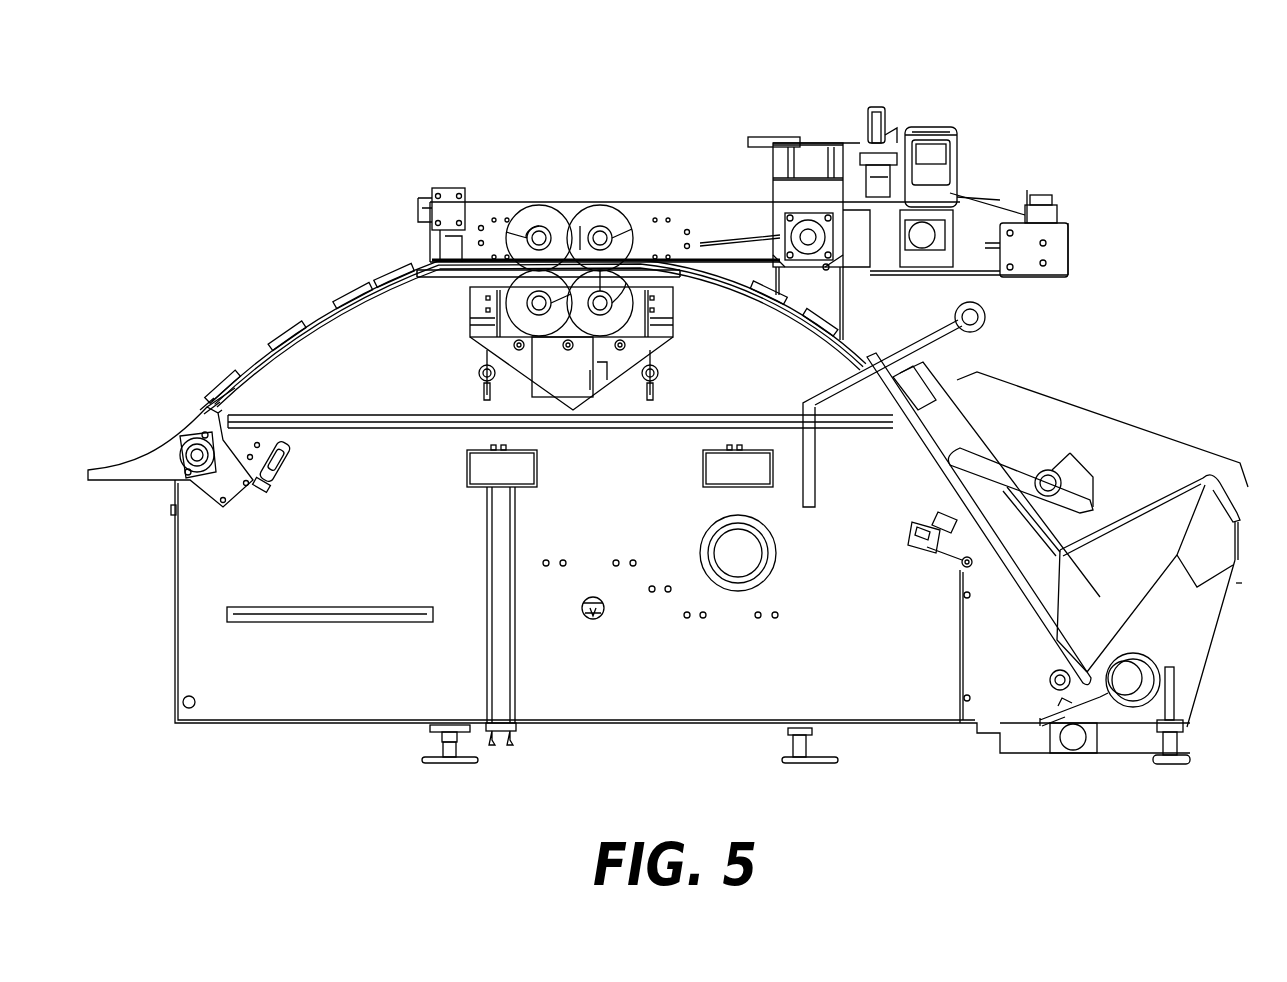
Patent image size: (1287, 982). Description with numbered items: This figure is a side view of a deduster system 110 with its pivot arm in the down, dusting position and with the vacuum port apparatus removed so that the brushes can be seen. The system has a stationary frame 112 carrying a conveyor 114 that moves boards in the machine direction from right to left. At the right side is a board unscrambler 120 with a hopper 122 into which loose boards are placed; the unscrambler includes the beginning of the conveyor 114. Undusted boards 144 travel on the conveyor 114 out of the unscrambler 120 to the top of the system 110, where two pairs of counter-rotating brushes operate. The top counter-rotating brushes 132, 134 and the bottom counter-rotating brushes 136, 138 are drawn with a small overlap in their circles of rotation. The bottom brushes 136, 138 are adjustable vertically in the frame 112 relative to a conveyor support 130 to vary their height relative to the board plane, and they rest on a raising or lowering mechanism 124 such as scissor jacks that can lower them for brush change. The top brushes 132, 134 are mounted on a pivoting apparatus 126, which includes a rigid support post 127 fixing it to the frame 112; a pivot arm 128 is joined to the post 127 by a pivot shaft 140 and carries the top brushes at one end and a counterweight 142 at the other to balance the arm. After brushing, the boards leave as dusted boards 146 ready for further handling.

The deduster system 110 is at (945, 822).
The stationary frame 112 is at (604, 672).
The conveyor 114 is at (335, 318).
The board unscrambler 120 is at (1110, 417).
The hopper 122 is at (1157, 593).
The raising or lowering mechanism 124 is at (568, 390).
The pivoting apparatus 126 is at (818, 133).
The rigid support post 127 is at (820, 303).
The pivot arm 128 is at (485, 215).
The conveyor support 130 is at (480, 305).
The top counter-rotating brush 132 is at (540, 222).
The top counter-rotating brush 134 is at (605, 225).
The bottom counter-rotating brush 136 is at (537, 320).
The bottom counter-rotating brush 138 is at (600, 320).
The pivot shaft 140 is at (813, 230).
The counterweight 142 is at (1030, 245).
The undusted boards 144 is at (940, 378).
The dusted boards 146 is at (280, 335).